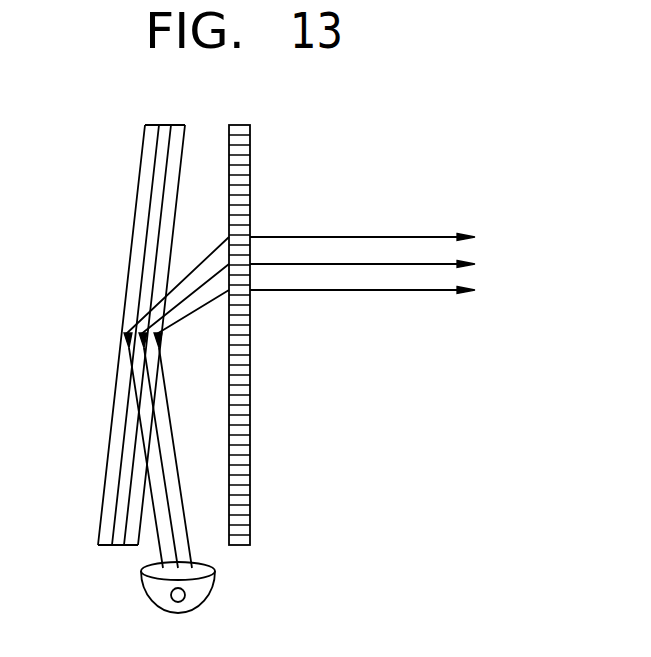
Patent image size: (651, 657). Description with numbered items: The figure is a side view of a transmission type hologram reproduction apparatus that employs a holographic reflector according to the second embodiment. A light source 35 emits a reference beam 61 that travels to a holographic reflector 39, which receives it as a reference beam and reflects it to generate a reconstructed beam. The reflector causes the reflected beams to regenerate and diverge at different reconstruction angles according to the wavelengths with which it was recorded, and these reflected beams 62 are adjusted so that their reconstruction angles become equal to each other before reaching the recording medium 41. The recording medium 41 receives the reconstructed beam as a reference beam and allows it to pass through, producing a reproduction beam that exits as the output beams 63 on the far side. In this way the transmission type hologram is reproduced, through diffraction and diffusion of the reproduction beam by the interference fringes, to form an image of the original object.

The light source 35 is at (197, 585).
The holographic reflector 39 is at (140, 273).
The recording medium 41 is at (251, 362).
The reference beam 61 is at (172, 466).
The reflected light rays 62 is at (196, 268).
The output light beams 63 is at (317, 236).